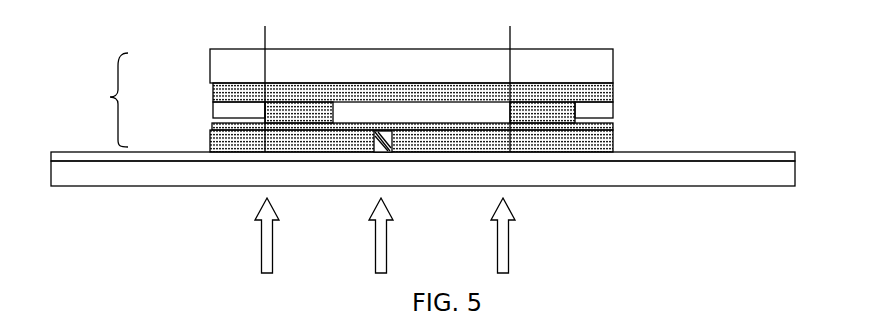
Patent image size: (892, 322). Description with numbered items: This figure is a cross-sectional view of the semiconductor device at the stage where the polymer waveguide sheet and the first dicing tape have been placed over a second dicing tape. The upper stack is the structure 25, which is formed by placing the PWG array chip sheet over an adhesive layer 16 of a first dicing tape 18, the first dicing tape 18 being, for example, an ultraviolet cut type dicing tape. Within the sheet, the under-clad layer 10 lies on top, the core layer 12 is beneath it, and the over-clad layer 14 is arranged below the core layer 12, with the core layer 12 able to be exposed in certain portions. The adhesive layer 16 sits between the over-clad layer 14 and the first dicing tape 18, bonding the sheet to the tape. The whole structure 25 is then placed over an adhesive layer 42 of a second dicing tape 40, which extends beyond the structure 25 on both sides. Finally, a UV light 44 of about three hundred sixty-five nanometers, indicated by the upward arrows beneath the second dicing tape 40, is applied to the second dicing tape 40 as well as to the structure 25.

The under-clad layer 10 is at (211, 63).
The core layer 12 is at (213, 97).
The over-clad layer 14 is at (228, 112).
The adhesive layer 16 is at (212, 126).
The first dicing tape 18 is at (212, 143).
The structure 25 is at (111, 97).
The second dicing tape 40 is at (772, 177).
The adhesive layer 42 is at (758, 152).
The UV light 44 is at (274, 230).